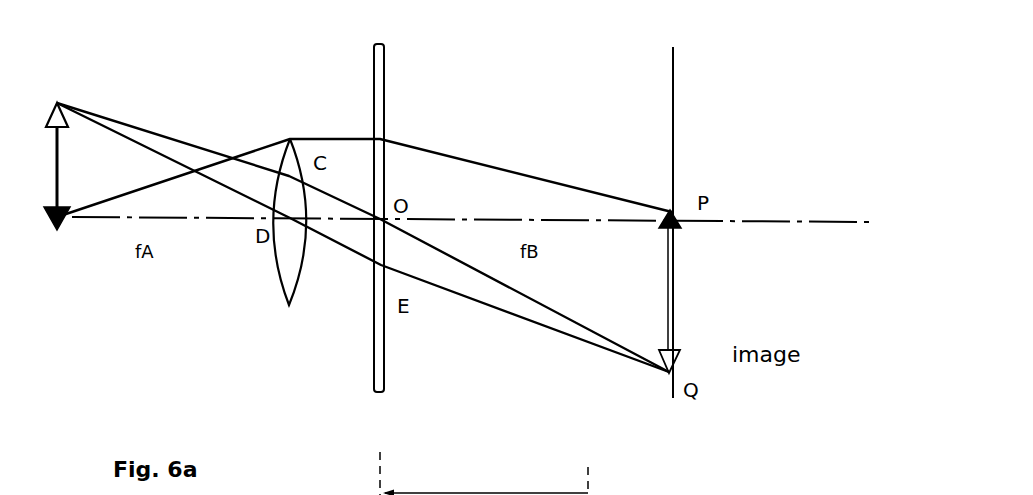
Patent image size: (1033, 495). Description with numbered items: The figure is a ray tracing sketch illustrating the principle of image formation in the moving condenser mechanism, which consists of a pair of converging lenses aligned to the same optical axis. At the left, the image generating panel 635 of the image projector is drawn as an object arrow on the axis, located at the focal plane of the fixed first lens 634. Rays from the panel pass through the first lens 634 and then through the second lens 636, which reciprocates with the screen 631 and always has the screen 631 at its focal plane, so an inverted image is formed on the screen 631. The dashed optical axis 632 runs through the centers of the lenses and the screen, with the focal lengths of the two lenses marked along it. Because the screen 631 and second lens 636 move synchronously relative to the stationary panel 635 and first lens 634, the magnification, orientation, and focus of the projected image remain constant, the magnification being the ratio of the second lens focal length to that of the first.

The screen 631 is at (682, 72).
The optical axis 632 is at (816, 217).
The first lens 634 is at (282, 158).
The image generating panel 635 is at (47, 98).
The second lens 636 is at (388, 76).